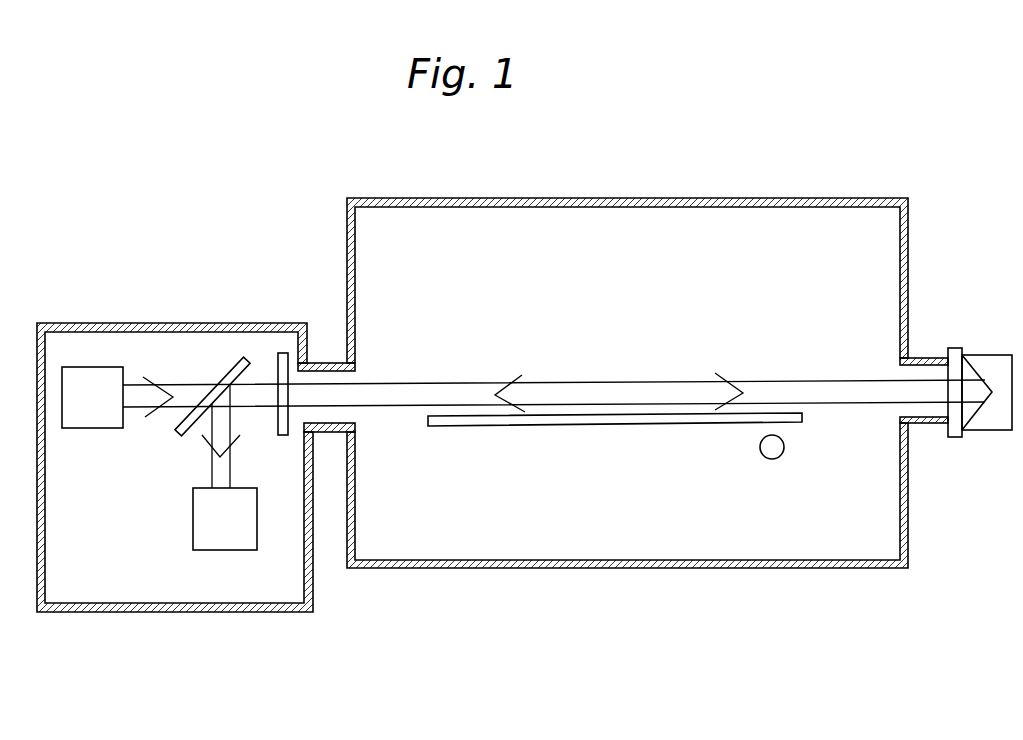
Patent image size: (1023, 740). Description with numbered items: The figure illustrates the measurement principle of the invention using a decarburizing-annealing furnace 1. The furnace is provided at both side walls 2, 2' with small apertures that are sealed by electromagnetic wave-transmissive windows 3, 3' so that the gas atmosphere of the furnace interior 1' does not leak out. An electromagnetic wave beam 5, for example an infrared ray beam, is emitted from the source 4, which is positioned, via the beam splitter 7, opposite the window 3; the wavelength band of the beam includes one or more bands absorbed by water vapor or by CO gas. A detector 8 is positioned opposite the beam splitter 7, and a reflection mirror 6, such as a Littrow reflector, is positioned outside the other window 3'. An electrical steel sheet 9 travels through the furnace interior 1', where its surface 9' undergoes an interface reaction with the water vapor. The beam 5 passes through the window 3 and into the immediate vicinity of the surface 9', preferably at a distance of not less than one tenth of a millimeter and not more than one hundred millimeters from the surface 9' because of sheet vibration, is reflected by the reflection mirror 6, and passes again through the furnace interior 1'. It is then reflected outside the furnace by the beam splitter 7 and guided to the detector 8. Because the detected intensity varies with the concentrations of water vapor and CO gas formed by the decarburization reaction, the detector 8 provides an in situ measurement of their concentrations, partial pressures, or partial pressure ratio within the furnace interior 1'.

The decarburizing-annealing furnace 1 is at (627, 360).
The furnace interior 1' is at (627, 355).
The side wall 2 is at (343, 386).
The side wall 2' is at (894, 374).
The electromagnetic wave-transmissive window 3 is at (286, 354).
The electromagnetic wave-transmissive window 3' is at (947, 418).
The source 4 is at (87, 367).
The electromagnetic wave beam 5 is at (547, 390).
The reflection mirror 6 is at (1001, 432).
The beam splitter 7 is at (245, 360).
The detector 8 is at (195, 538).
The electrical steel sheet 9 is at (615, 446).
The surface 9' is at (615, 370).